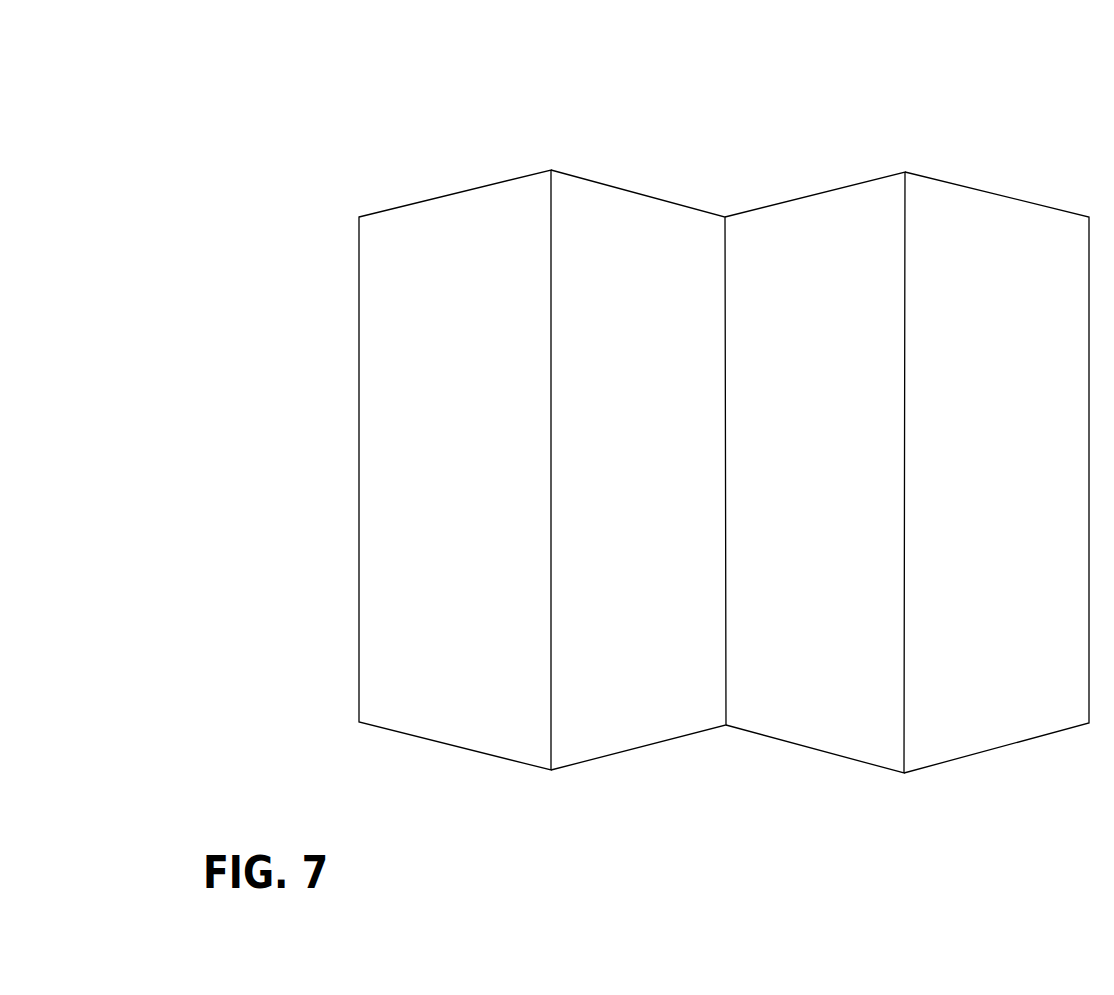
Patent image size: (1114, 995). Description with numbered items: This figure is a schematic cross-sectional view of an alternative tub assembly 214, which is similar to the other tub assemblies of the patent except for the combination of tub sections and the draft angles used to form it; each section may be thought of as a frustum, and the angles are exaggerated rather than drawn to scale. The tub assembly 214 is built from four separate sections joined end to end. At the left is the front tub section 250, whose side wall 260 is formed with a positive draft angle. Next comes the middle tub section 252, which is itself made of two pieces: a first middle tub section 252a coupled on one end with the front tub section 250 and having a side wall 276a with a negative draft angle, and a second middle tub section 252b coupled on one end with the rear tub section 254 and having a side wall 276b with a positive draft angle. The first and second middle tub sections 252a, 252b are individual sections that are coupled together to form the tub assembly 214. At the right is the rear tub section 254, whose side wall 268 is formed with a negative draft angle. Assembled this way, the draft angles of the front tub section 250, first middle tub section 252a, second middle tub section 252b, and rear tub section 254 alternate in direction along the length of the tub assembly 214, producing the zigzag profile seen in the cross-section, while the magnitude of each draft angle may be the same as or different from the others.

The tub assembly 214 is at (732, 400).
The front tub section 250 is at (455, 436).
The side wall 260 is at (422, 182).
The middle tub section 252 is at (729, 418).
The first middle tub section 252a is at (638, 430).
The side wall 276a is at (607, 183).
The second middle tub section 252b is at (816, 438).
The side wall 276b is at (843, 185).
The rear tub section 254 is at (1004, 433).
The side wall 268 is at (1002, 172).